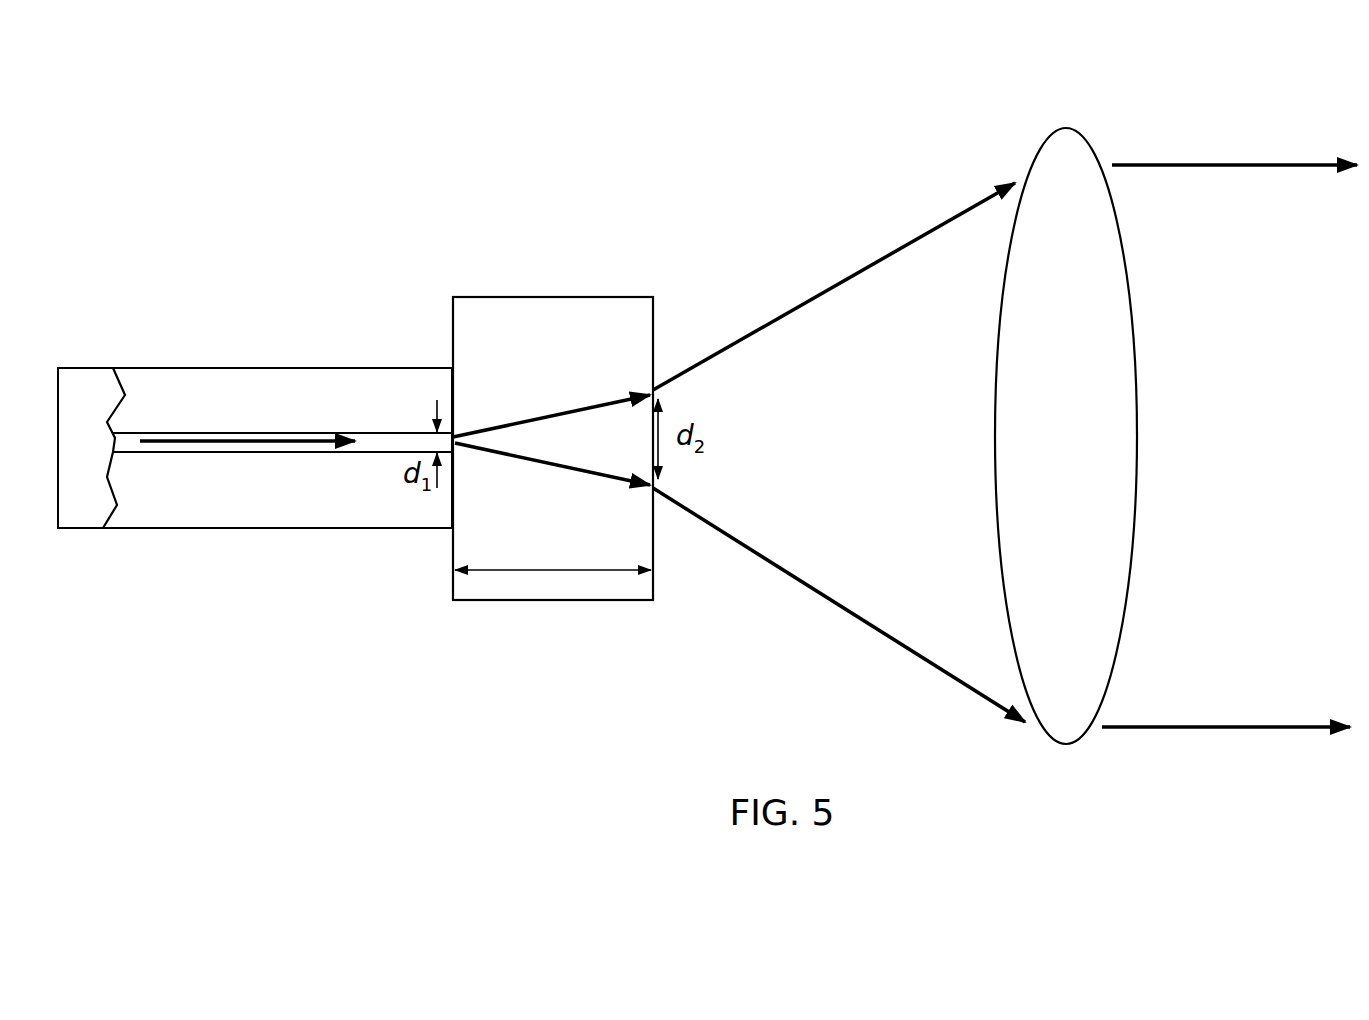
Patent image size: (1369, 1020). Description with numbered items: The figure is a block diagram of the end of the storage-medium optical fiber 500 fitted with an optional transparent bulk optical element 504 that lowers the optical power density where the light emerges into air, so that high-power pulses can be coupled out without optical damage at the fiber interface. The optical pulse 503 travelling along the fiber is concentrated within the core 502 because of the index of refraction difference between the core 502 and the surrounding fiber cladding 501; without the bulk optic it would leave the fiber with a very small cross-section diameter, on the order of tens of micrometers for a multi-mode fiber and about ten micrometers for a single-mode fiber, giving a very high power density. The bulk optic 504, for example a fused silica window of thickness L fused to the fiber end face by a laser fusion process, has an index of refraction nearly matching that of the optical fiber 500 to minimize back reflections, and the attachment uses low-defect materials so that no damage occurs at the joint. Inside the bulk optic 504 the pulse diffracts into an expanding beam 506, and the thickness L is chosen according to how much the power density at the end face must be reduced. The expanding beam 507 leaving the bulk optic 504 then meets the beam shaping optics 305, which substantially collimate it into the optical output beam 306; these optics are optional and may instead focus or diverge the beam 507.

The optical fiber end 500 is at (208, 358).
The fiber cladding 501 is at (260, 387).
The core 502 is at (388, 443).
The optical pulse 503 is at (217, 443).
The transparent bulk optical element 504 is at (540, 298).
The expanding beam 506 is at (555, 408).
The expanding beam emerging from bulk optic 507 is at (812, 295).
The beam shaping optics 305 is at (1058, 167).
The optical output beam 306 is at (1272, 158).